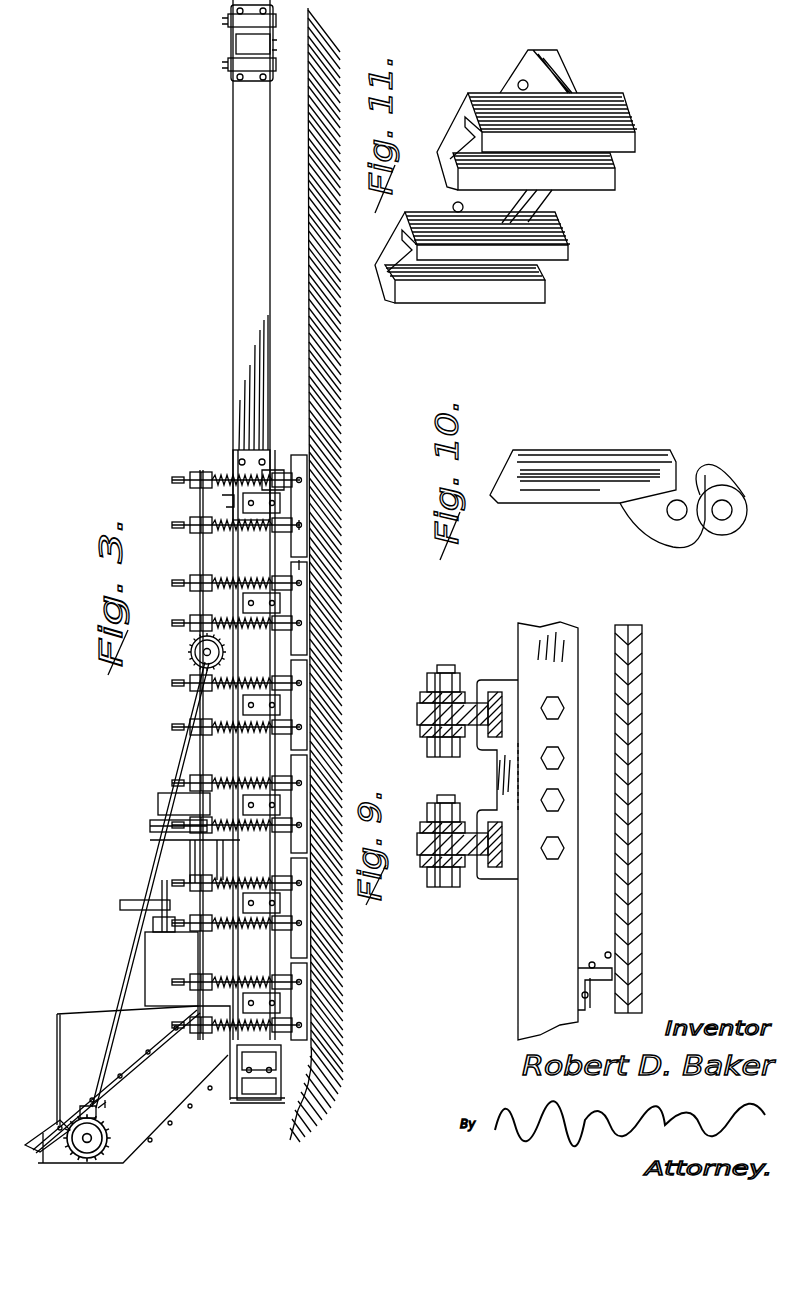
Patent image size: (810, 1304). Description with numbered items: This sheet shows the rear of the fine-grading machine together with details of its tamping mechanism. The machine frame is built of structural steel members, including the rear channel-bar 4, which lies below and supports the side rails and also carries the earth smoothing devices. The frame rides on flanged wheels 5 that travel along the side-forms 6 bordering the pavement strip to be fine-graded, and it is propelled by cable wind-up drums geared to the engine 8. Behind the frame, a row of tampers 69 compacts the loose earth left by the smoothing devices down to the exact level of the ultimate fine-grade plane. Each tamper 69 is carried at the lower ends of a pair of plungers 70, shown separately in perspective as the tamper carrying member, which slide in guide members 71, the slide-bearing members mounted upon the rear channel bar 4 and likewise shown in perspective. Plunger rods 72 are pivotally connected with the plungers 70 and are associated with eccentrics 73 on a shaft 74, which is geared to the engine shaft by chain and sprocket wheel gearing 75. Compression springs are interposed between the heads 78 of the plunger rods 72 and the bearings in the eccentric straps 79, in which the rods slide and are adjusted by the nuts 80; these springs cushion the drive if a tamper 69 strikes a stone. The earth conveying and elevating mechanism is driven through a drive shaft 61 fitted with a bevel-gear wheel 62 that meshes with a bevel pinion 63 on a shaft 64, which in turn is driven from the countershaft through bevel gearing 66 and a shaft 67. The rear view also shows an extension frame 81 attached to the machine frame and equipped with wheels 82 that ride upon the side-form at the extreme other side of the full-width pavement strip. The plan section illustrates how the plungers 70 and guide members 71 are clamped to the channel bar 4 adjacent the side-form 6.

In FIG. 3, the rear channel-bar 4 is at (236, 458).
In FIG. 9, the rear channel-bar 4 is at (516, 1000).
In FIG. 3, the flanged wheels 5 is at (281, 1070).
In FIG. 3, the side-forms 6 is at (275, 52).
In FIG. 3, the engine 8 is at (103, 1014).
In FIG. 3, the drive shaft 61 is at (72, 1135).
In FIG. 3, the bevel-gear wheel 62 is at (100, 1140).
In FIG. 3, the bevel pinion 63 is at (80, 1112).
In FIG. 3, the shaft 64 is at (135, 955).
In FIG. 3, the bevel gearing 66 is at (192, 652).
In FIG. 3, the shaft 67 is at (195, 620).
In FIG. 3, the tampers 69 is at (307, 595).
In FIG. 3, the plungers 70 is at (300, 623).
In FIG. 10, the plungers 70 is at (610, 448).
In FIG. 9, the plungers 70 is at (496, 688).
In FIG. 3, the guide members 71 is at (228, 580).
In FIG. 11, the guide members 71 is at (605, 150).
In FIG. 9, the guide members 71 is at (480, 688).
In FIG. 3, the plunger rods 72 is at (178, 525).
In FIG. 3, the eccentrics 73 is at (195, 488).
In FIG. 3, the shaft 74 is at (182, 775).
In FIG. 3, the chain and sprocket wheel gearing 75 is at (190, 842).
In FIG. 3, the heads 78 is at (303, 510).
In FIG. 9, the heads 78 is at (480, 752).
In FIG. 3, the eccentric straps 79 is at (190, 478).
In FIG. 3, the nuts 80 is at (186, 522).
In FIG. 3, the extension frame 81 is at (233, 400).
In FIG. 3, the wheels 82 is at (235, 50).